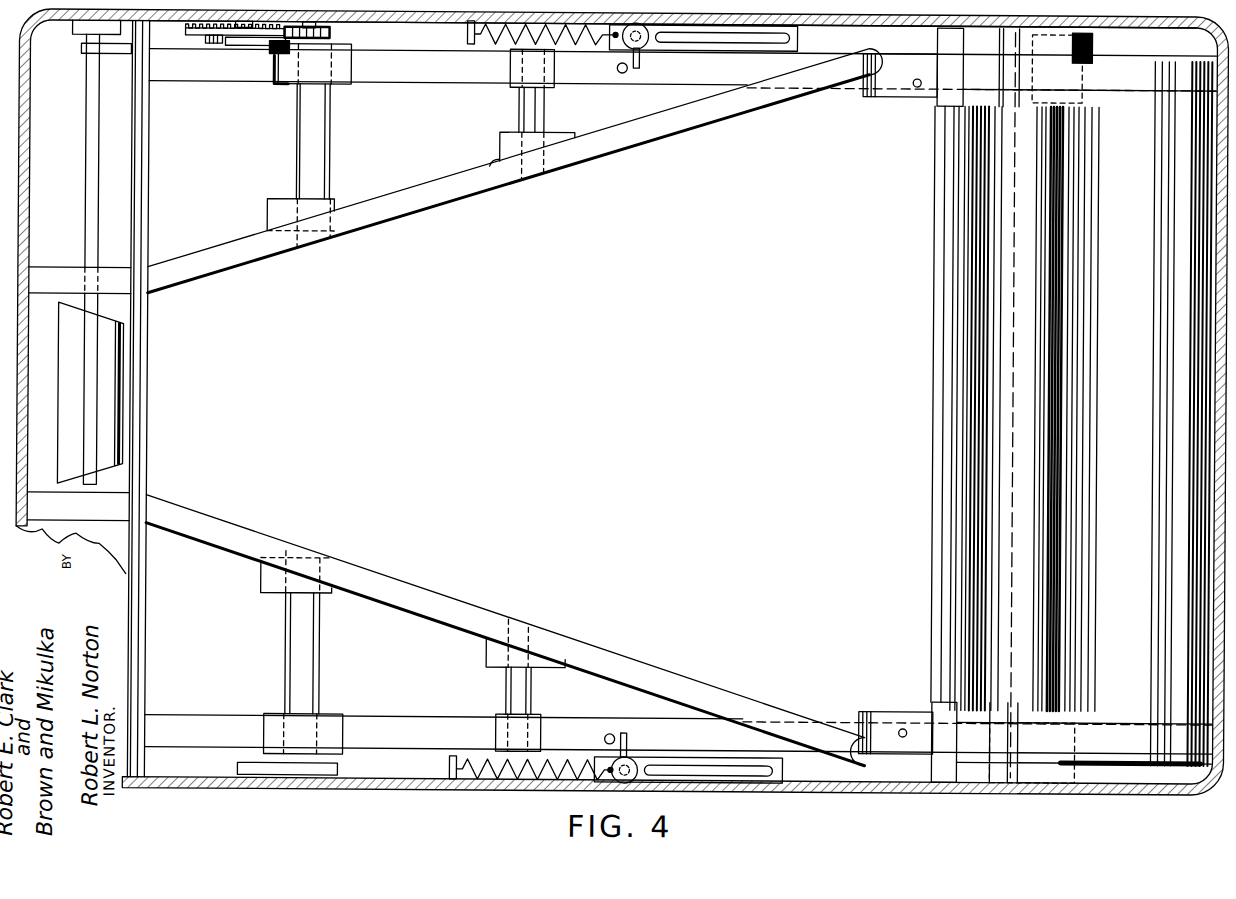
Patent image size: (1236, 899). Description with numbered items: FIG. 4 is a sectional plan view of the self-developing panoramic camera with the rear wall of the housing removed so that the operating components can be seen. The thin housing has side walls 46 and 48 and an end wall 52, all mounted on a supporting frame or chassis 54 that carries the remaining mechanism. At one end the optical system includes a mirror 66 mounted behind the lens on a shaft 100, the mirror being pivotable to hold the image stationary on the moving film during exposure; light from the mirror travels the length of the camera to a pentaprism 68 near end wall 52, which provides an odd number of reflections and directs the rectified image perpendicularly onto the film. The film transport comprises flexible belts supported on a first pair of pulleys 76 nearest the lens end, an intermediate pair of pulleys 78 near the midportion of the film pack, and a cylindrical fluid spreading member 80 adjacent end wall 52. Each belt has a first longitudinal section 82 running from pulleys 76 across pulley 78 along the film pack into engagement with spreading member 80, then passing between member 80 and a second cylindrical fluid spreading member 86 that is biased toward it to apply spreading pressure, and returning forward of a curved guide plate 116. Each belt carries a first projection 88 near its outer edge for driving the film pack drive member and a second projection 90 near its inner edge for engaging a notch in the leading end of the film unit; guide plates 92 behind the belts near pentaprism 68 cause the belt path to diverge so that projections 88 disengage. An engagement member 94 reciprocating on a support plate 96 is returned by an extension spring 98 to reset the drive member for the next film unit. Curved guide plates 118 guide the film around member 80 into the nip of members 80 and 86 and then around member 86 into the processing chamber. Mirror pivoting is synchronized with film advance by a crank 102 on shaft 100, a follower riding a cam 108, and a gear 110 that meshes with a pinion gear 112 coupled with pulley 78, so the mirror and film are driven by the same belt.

The side wall 46 is at (430, 791).
The side wall 48 is at (432, 24).
The end wall 52 is at (1213, 396).
The supporting frame or chassis 54 is at (246, 255).
The mirror 66 is at (108, 410).
The pentaprism 68 is at (968, 575).
The first pair of pulleys 76 is at (340, 88).
The intermediate pair of pulleys 78 is at (512, 98).
The cylindrical fluid spreading member 80 is at (1135, 632).
The first longitudinal section 82 is at (590, 83).
The second cylindrical fluid spreading member 86 is at (1108, 43).
The first projection 88 is at (619, 74).
The second projection 90 is at (916, 86).
The guide plates 92 is at (856, 92).
The engagement member 94 is at (640, 66).
The support plate 96 is at (722, 46).
The extension spring 98 is at (548, 45).
The shaft 100 is at (90, 218).
The crank 102 is at (110, 47).
The cam 108 is at (237, 48).
The gear 110 is at (200, 50).
The pinion gear 112 is at (327, 36).
The curved guide plate 116 is at (1208, 463).
The curved guide plate 118 is at (1018, 500).